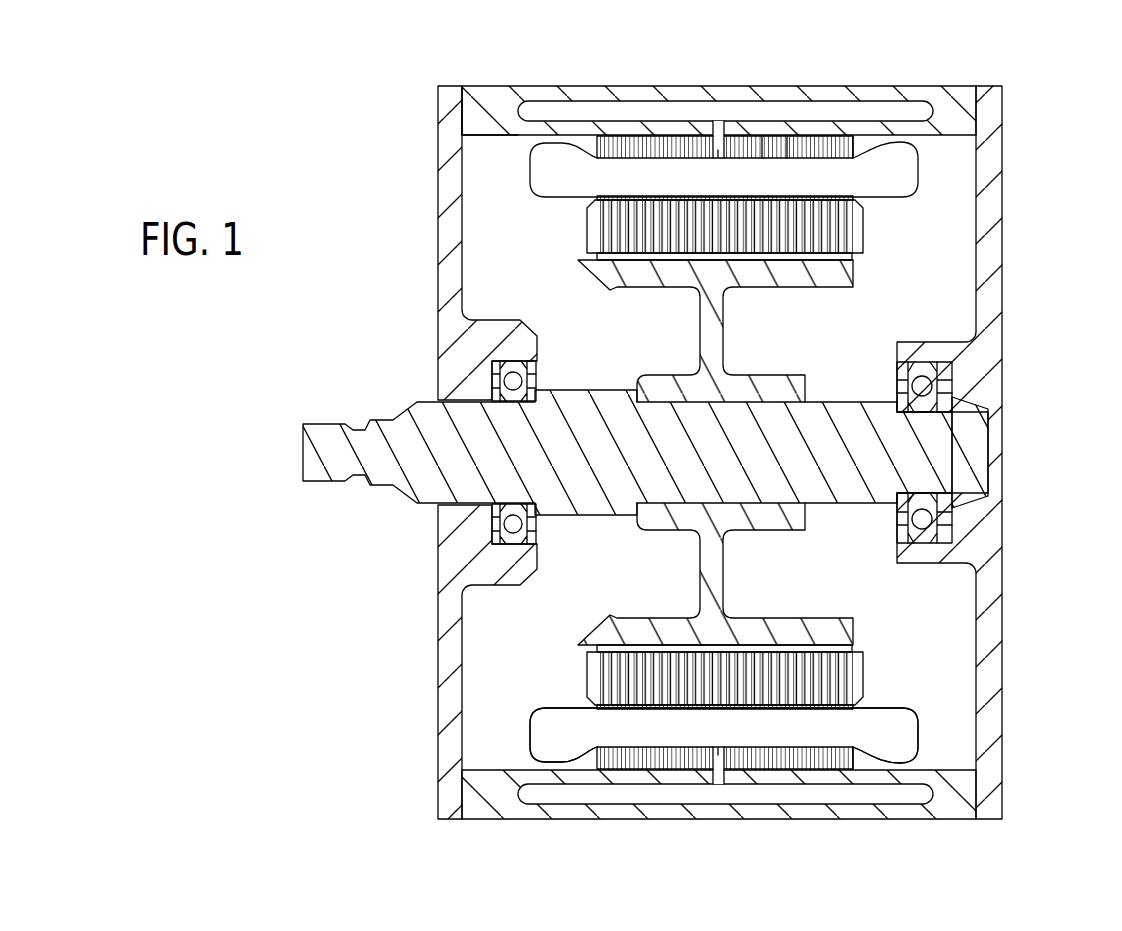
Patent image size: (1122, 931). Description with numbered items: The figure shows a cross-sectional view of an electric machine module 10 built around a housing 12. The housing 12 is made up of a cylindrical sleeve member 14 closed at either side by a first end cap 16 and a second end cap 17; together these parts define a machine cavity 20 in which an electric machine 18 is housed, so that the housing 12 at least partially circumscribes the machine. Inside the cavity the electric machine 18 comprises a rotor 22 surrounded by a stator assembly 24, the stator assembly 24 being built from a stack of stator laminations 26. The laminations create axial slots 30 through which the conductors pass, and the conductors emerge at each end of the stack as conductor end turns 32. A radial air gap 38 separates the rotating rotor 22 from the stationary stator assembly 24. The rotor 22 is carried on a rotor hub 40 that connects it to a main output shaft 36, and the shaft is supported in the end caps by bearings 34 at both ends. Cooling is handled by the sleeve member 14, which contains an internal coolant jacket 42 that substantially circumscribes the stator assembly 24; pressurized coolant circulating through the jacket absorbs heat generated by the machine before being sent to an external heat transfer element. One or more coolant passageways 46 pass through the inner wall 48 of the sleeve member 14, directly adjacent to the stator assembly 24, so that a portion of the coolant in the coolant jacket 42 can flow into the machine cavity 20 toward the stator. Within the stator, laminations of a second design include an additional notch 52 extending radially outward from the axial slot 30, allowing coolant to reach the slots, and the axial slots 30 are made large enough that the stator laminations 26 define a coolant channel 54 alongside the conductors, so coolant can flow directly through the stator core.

The electric machine module 10 is at (659, 451).
The housing 12 is at (738, 451).
The sleeve member 14 is at (731, 451).
The first end cap 16 is at (445, 186).
The second end cap 17 is at (1004, 339).
The electric machine 18 is at (722, 448).
The machine cavity 20 is at (731, 374).
The rotor 22 is at (627, 237).
The stator assembly 24 is at (727, 448).
The stator laminations 26 is at (823, 150).
The axial slots 30 is at (859, 150).
The conductor end turns 32 is at (530, 185).
The bearings 34 is at (492, 392).
The main output shaft 36 is at (375, 465).
The radial air gap 38 is at (638, 199).
The rotor hub 40 is at (708, 337).
The coolant jacket 42 is at (688, 108).
The coolant passageways 46 is at (717, 128).
The inner wall 48 is at (472, 142).
The additional notch 52 is at (537, 738).
The coolant channel 54 is at (773, 148).